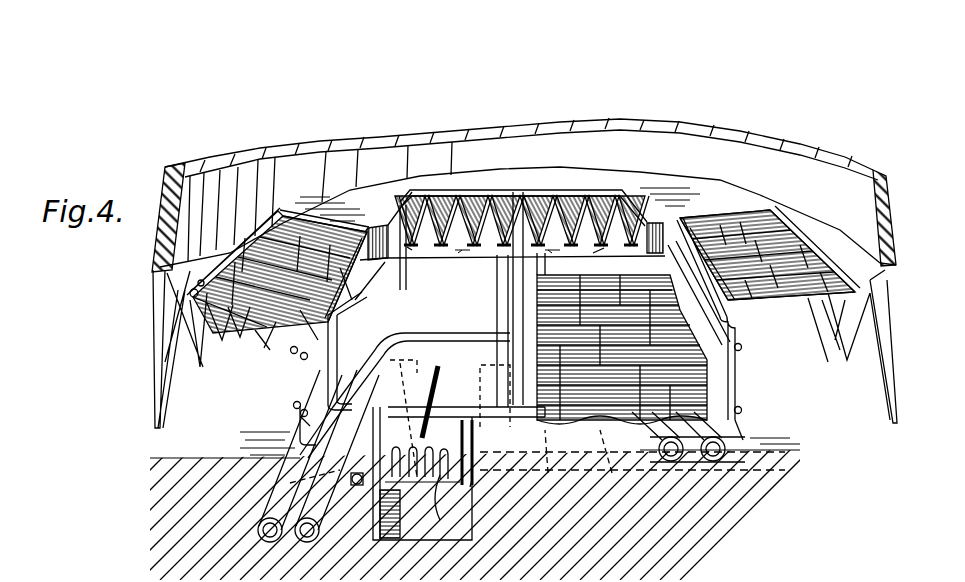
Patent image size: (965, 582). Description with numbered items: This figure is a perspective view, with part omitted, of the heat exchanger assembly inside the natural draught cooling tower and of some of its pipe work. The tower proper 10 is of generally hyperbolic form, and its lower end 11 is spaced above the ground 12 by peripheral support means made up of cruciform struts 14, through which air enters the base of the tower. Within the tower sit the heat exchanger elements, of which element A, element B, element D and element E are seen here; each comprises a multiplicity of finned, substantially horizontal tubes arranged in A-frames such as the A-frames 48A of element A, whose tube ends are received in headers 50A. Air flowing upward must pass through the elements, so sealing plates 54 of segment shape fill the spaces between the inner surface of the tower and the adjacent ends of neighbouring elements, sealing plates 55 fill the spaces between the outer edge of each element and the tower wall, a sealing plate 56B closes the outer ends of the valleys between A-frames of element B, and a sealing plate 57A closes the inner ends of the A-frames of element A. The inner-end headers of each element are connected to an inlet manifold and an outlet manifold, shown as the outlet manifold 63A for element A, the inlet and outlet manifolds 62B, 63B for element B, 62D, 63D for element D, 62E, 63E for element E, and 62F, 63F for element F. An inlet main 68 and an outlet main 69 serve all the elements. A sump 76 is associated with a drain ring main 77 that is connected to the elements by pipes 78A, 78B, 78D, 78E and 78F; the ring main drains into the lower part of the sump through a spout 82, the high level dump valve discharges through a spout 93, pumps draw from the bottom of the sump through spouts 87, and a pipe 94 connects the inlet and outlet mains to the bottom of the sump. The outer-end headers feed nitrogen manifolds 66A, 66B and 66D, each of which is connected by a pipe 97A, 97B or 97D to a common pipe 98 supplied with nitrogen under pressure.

The tower proper 10 is at (890, 197).
The lower end of the tower 11 is at (903, 267).
The ground 12 is at (797, 450).
The cruciform struts 14 is at (883, 348).
The sealing plates 54 is at (730, 200).
The sealing plates 55 is at (512, 190).
The sealing plate 56B is at (840, 240).
The A-frames 48A is at (614, 213).
The nitrogen manifold 66A is at (513, 193).
The nitrogen manifold 66B is at (797, 242).
The nitrogen manifold 66D is at (243, 240).
The sealing plate 57A is at (593, 253).
The outlet manifold 63A is at (458, 253).
The headers 50A is at (552, 253).
The inlet manifold 62B is at (742, 347).
The outlet manifold 63B is at (740, 360).
The inlet manifold 62E is at (742, 410).
The outlet manifold 63E is at (743, 440).
The pipe 97A is at (500, 283).
The pipe 97B is at (825, 290).
The pipe 97D is at (195, 340).
The inlet main 68 is at (270, 543).
The outlet main 69 is at (307, 543).
The pipe 78A is at (485, 407).
The pipe 78B is at (612, 473).
The pipe 78D is at (385, 343).
The pipe 78E is at (548, 473).
The pipe 78F is at (290, 483).
The common pipe 98 is at (440, 370).
The inlet manifold 62D is at (290, 350).
The outlet manifold 63D is at (301, 357).
The inlet manifold 62F is at (294, 403).
The outlet manifold 63F is at (300, 416).
The sump 76 is at (443, 523).
The drain ring main 77 is at (470, 487).
The spout 82 is at (440, 475).
The spouts 87 is at (422, 508).
The spout 93 is at (355, 486).
The pipe 94 is at (420, 479).
The heat exchanger element D is at (307, 212).
The heat exchanger element A is at (567, 213).
The heat exchanger element B is at (755, 218).
The heat exchanger element E is at (675, 228).